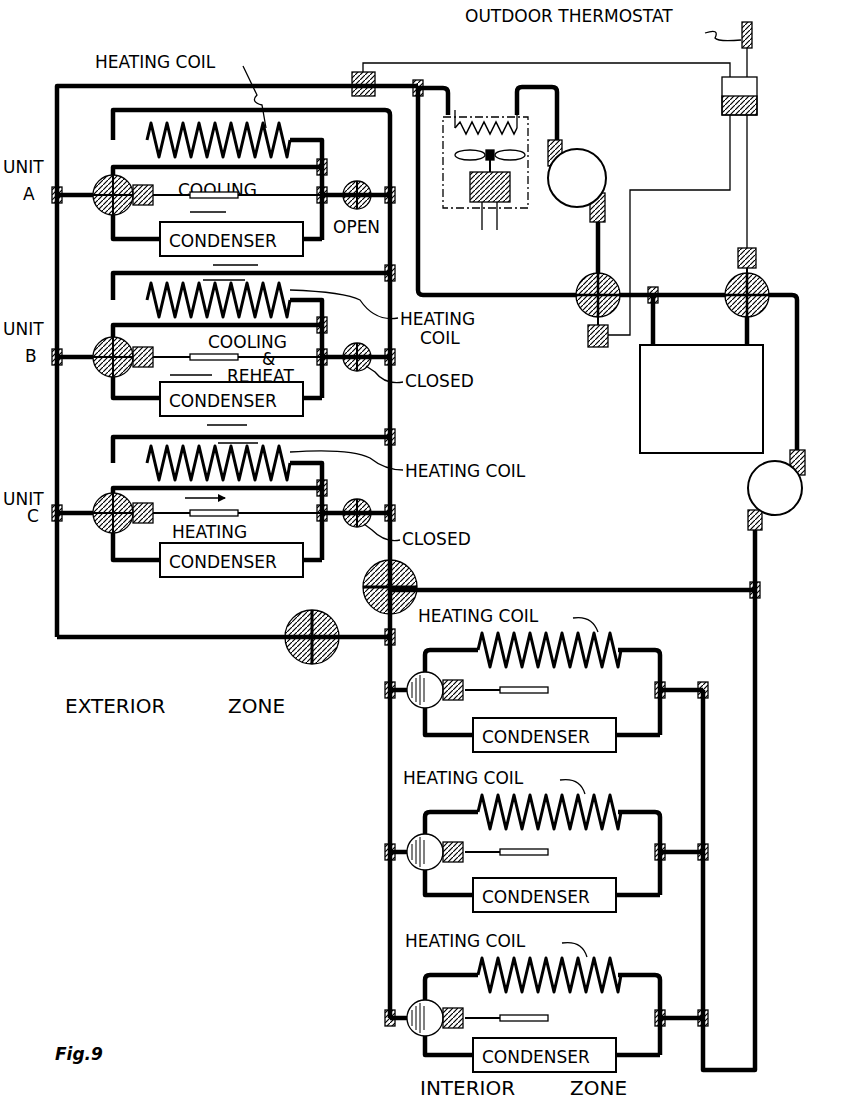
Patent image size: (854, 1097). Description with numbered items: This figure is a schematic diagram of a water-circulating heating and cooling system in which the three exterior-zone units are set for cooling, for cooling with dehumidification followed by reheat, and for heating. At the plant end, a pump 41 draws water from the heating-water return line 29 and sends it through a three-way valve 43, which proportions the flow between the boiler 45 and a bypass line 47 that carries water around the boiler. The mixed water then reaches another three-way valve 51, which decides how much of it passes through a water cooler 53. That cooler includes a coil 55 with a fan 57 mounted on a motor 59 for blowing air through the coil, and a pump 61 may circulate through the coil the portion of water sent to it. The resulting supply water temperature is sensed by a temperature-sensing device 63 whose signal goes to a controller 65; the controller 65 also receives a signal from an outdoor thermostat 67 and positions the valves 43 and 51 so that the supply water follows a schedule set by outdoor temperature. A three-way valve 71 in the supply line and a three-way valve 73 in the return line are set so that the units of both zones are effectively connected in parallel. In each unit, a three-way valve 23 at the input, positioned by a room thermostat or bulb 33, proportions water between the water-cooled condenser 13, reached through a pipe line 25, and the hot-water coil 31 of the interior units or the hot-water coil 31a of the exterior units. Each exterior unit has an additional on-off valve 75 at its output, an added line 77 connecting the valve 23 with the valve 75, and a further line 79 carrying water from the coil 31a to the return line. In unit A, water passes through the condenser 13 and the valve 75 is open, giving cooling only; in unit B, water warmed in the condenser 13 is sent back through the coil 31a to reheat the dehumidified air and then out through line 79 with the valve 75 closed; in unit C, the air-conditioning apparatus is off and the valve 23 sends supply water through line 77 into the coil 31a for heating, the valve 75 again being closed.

The water-cooled condenser 13 is at (160, 249).
The 3-way valve 23 is at (100, 211).
The pipe line 25 is at (112, 237).
The heating-water return line 29 is at (798, 312).
The hot-water coil 31 is at (626, 641).
The hot-water coil 31a is at (282, 128).
The bulb 33 is at (238, 197).
The pump 41 is at (748, 496).
The 3-way valve 43 is at (760, 283).
The boiler 45 is at (640, 403).
The bypass line 47 is at (661, 292).
The 3-way valve 51 is at (585, 312).
The water cooler 53 is at (528, 190).
The coil 55 is at (494, 122).
The fan 57 is at (470, 160).
The motor 59 is at (482, 206).
The pump 61 is at (605, 176).
The temperature-sensing device 63 is at (353, 74).
The controller 65 is at (757, 98).
The outdoor thermostat 67 is at (752, 36).
The 3-way valve 71 is at (292, 621).
The 3-way valve 73 is at (416, 573).
The valve 75 is at (358, 181).
The line 77 is at (297, 169).
The line 79 is at (255, 108).